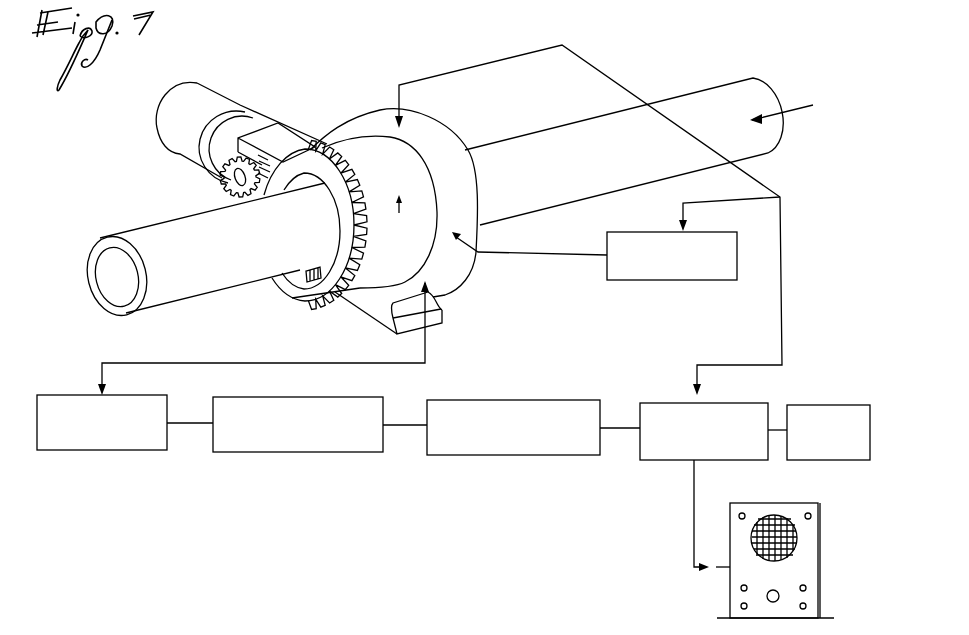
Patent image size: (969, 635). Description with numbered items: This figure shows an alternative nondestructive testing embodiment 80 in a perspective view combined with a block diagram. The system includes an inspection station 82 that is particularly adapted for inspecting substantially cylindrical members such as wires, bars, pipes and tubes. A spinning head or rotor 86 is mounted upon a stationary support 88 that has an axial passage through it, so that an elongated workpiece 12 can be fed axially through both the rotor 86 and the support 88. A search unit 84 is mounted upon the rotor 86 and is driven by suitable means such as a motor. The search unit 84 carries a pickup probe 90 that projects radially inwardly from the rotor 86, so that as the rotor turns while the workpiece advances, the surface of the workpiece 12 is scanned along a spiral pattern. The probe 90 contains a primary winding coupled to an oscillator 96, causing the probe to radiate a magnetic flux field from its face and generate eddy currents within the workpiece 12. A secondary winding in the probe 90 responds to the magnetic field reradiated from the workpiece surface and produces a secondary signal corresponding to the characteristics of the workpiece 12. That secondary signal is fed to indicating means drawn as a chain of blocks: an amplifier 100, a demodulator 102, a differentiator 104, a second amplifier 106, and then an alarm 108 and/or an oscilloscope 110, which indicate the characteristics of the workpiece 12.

The workpiece 12 is at (186, 297).
The embodiment 80 is at (557, 345).
The inspection station 82 is at (320, 96).
The search unit 84 is at (301, 289).
The spinning head or rotor 86 is at (383, 167).
The stationary support 88 is at (428, 137).
The pickup probe 90 is at (313, 263).
The oscillator 96 is at (682, 281).
The amplifier 100 is at (113, 451).
The demodulator 102 is at (322, 453).
The differentiator 104 is at (523, 456).
The amplifier 106 is at (681, 461).
The alarm 108 is at (840, 461).
The oscilloscope 110 is at (728, 587).